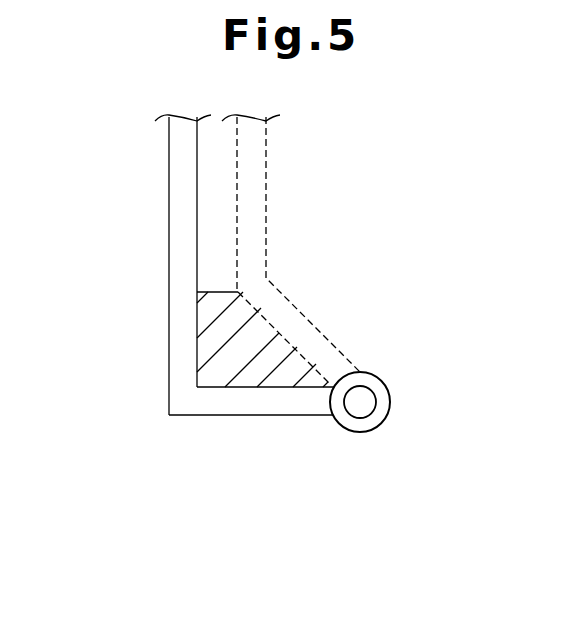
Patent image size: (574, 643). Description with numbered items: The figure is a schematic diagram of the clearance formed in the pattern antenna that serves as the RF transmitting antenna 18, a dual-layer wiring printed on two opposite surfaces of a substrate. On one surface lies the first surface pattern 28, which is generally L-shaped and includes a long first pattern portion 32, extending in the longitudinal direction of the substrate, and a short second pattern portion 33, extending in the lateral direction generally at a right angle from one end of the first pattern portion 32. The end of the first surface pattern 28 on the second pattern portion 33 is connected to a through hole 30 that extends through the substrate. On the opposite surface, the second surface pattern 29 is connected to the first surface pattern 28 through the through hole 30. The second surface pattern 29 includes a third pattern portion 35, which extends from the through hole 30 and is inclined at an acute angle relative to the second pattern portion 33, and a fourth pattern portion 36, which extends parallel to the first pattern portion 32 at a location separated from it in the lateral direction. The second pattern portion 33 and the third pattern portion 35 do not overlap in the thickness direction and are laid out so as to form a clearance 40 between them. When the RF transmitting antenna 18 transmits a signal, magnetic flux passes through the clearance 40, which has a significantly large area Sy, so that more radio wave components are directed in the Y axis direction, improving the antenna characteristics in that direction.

The RF transmitting antenna 18 is at (129, 457).
The first surface pattern 28 is at (169, 162).
The first pattern portion 32 is at (172, 223).
The second surface pattern 29 is at (267, 159).
The fourth pattern portion 36 is at (267, 199).
The third pattern portion 35 is at (318, 318).
The clearance 40 is at (206, 328).
The second pattern portion 33 is at (232, 405).
The area Sy is at (284, 377).
The through hole 30 is at (390, 400).